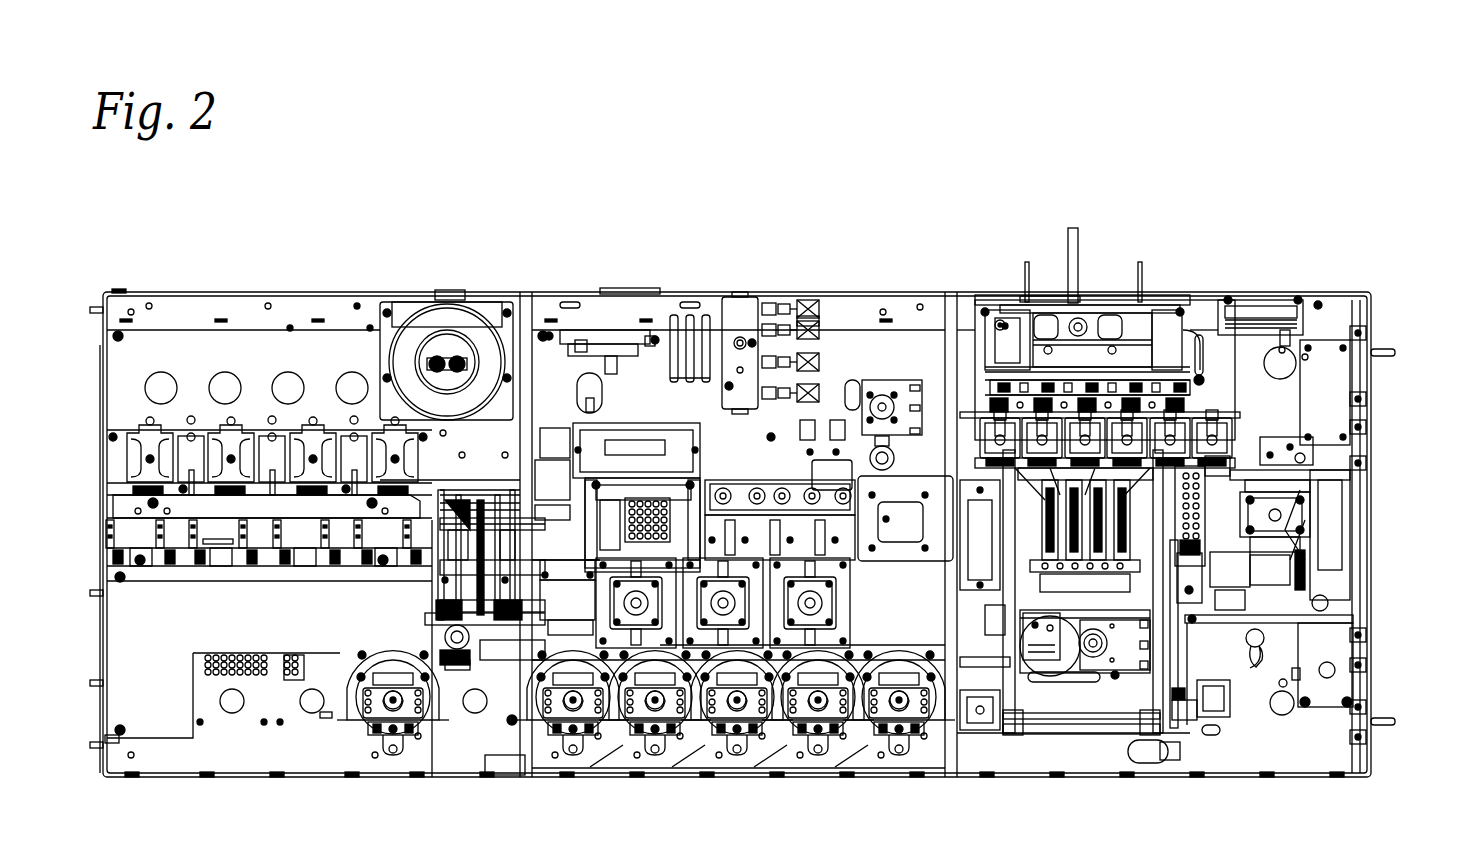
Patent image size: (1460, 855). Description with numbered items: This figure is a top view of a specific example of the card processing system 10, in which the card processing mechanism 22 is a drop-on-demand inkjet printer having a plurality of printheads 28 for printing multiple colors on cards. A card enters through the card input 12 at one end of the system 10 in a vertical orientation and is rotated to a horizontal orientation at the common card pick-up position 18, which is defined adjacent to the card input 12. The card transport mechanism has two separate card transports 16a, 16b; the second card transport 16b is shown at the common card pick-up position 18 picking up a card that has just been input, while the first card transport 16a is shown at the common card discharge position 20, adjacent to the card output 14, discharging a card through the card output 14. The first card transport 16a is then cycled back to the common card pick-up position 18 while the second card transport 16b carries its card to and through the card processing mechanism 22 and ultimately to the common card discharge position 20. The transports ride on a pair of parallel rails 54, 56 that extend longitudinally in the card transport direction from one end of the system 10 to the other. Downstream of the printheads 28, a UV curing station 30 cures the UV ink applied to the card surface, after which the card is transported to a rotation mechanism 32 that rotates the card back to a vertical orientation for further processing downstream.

The card processing system 10 is at (1000, 225).
The card input 12 is at (1366, 475).
The card output 14 is at (823, 488).
The first card transport 16a is at (908, 492).
The second card transport 16b is at (1300, 487).
The common card pick-up position 18 is at (1290, 485).
The common card discharge position 20 is at (895, 568).
The card processing mechanism 22 is at (1153, 345).
The printheads 28 is at (1082, 575).
The UV curing station 30 is at (612, 462).
The rotation mechanism 32 is at (433, 492).
The rail 54 is at (1247, 450).
The rail 56 is at (1210, 592).